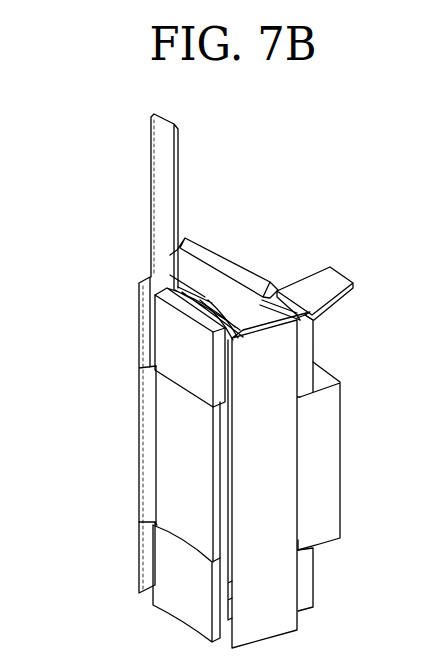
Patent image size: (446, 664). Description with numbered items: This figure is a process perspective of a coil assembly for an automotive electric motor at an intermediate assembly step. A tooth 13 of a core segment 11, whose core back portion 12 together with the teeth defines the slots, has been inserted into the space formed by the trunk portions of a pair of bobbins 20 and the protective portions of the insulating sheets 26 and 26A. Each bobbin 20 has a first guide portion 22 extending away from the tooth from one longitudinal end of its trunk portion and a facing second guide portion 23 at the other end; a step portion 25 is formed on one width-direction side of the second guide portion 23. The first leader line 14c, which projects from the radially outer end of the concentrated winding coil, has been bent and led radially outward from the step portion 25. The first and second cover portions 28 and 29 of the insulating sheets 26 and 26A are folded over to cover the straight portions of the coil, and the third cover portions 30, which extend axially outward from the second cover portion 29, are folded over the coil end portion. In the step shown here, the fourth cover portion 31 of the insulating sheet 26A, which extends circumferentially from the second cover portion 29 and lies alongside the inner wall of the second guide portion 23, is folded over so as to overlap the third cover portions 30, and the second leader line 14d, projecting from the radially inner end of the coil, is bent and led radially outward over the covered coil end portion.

The core segment 11 is at (348, 376).
The core back portion 12 is at (329, 428).
The tooth 13 is at (175, 438).
The first leader line 14c is at (336, 278).
The second leader line 14d is at (173, 163).
The bobbin 20 is at (162, 347).
The first guide portion 22 is at (162, 322).
The second guide portion 23 is at (250, 283).
The step portion 25 is at (318, 315).
The insulating sheet 26 is at (305, 538).
The insulating sheet 26A is at (133, 286).
The first cover portion 28 is at (152, 392).
The second cover portion 29 is at (143, 545).
The third cover portion 30 is at (232, 310).
The fourth cover portion 31 is at (200, 272).